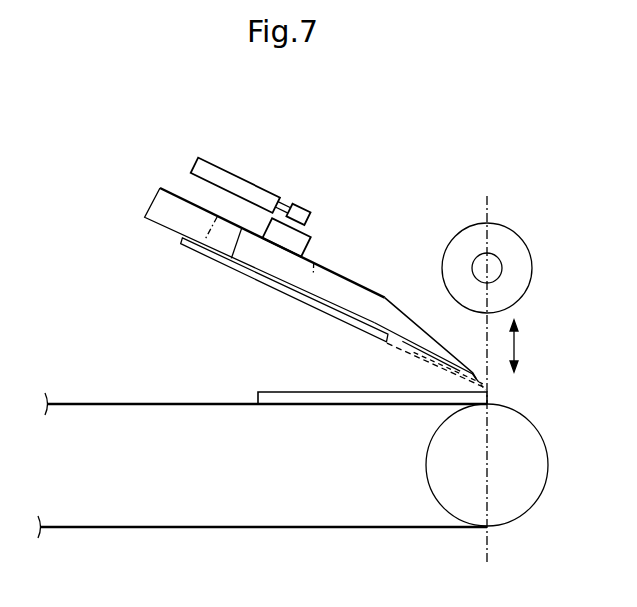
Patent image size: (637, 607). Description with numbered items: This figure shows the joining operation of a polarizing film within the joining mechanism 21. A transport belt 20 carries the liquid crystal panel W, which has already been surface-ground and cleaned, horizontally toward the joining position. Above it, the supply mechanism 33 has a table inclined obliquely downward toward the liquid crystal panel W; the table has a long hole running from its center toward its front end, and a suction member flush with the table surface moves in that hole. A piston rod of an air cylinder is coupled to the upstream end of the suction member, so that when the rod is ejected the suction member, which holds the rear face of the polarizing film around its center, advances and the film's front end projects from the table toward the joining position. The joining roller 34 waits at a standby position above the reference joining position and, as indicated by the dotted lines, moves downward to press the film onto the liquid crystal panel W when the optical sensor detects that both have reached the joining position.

The transport belt 20 is at (150, 527).
The joining mechanism 21 is at (370, 213).
The supply mechanism 33 is at (151, 163).
The joining roller 34 is at (533, 262).
The liquid crystal panel W is at (330, 406).